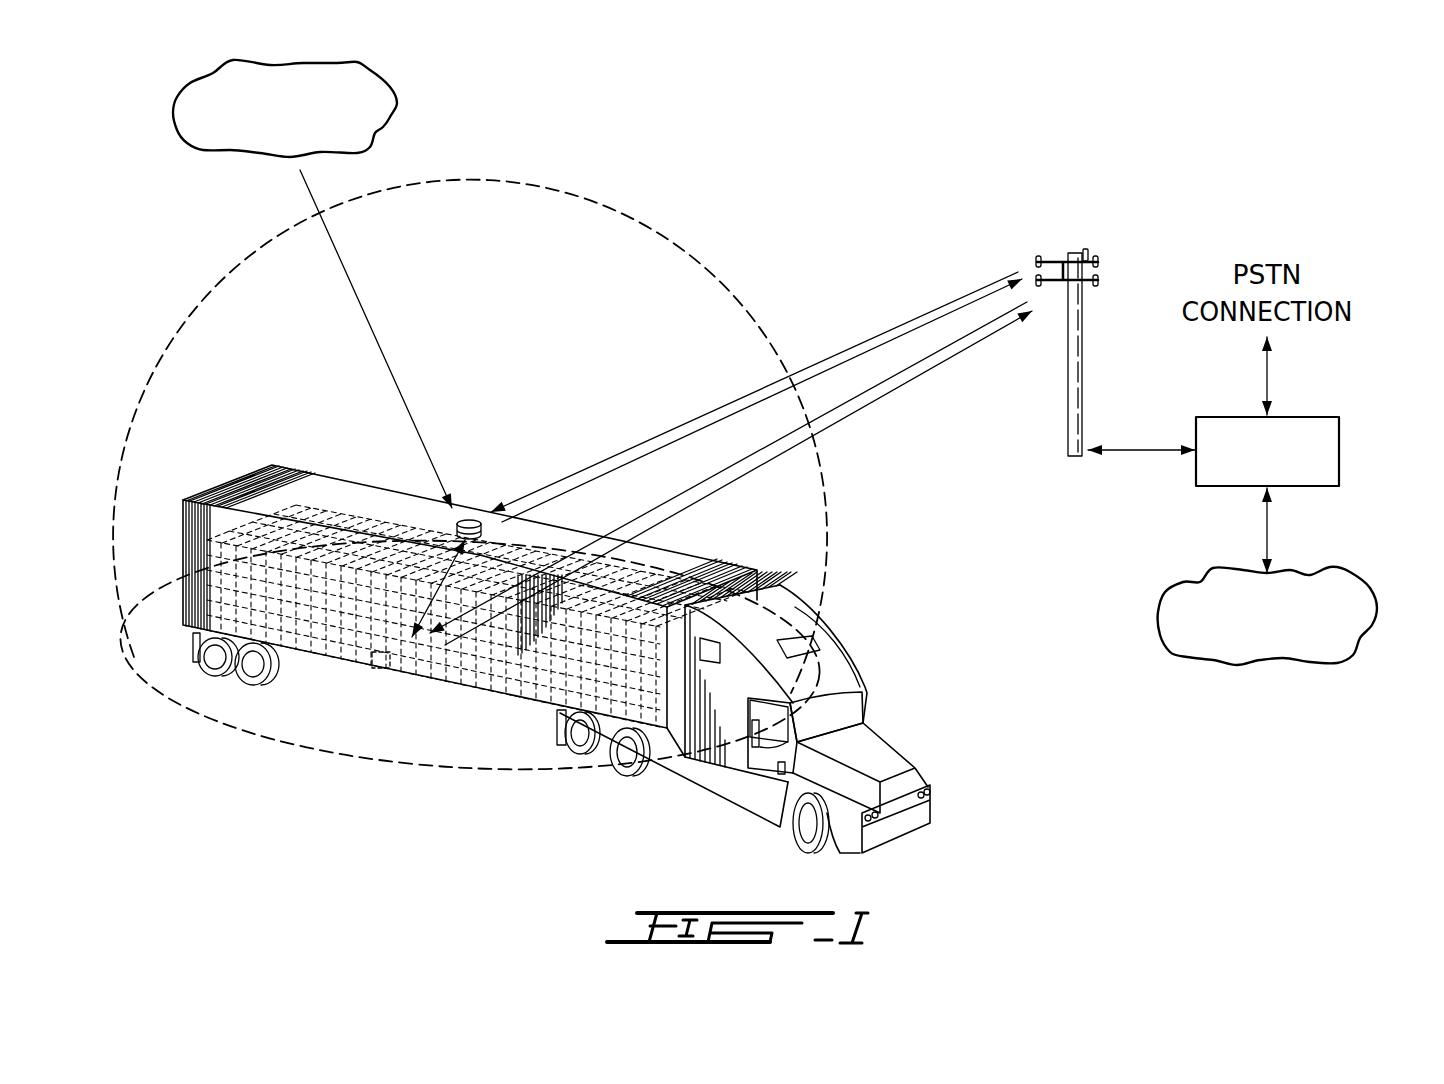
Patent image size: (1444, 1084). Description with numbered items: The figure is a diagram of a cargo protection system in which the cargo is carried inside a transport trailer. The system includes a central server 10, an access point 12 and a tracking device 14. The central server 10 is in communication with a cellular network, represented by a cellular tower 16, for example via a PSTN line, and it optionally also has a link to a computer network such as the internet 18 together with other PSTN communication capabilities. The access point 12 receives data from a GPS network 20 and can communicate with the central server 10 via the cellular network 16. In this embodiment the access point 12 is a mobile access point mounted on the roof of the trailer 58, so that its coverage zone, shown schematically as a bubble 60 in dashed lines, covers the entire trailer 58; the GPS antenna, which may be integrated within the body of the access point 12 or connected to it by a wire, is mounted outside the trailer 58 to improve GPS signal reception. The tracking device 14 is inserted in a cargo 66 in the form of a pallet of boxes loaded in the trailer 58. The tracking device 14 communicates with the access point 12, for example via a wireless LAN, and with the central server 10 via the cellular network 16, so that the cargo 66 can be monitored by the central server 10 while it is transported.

The central server 10 is at (1332, 452).
The access point 12 is at (468, 521).
The tracking device 14 is at (408, 675).
The cellular tower 16 is at (1072, 363).
The internet 18 is at (1340, 645).
The GPS network 20 is at (371, 103).
The trailer 58 is at (185, 500).
The bubble 60 is at (178, 330).
The cargo 66 is at (377, 655).